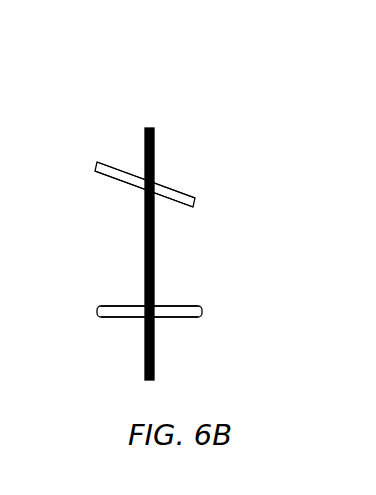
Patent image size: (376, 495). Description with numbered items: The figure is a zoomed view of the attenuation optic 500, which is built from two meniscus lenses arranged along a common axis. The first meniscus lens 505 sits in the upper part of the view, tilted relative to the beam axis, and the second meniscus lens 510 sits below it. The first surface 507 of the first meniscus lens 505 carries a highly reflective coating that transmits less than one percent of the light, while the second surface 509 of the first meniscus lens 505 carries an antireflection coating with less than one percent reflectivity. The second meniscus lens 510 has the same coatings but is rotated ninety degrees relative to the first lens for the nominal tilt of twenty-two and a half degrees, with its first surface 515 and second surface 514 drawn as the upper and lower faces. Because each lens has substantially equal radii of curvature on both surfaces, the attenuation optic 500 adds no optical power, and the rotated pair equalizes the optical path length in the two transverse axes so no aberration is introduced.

The attenuation optic 500 is at (212, 172).
The first meniscus lens 505 is at (94, 158).
The first surface of the first meniscus lens 507 is at (121, 162).
The second surface of the first meniscus lens 509 is at (172, 206).
The second meniscus lens 510 is at (95, 312).
The first surface of second optical element 515 is at (116, 303).
The second surface of the second meniscus lens 514 is at (171, 320).